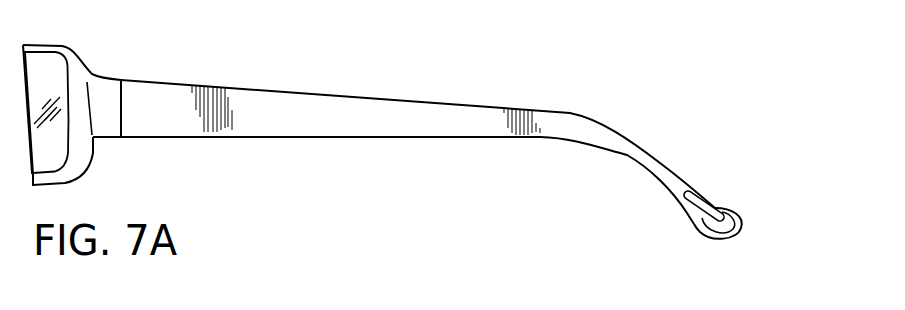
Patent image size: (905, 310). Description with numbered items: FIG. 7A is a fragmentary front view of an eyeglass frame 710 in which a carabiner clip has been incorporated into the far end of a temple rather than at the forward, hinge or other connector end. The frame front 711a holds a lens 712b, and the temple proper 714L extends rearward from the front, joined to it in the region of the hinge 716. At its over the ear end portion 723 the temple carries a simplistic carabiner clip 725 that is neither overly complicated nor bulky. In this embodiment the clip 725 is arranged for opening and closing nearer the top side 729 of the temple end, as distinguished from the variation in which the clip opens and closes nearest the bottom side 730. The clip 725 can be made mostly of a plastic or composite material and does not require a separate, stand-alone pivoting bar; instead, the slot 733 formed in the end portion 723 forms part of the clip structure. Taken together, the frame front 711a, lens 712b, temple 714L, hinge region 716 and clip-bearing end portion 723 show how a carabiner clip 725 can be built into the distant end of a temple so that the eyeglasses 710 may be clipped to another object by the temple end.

The eyeglasses 710 is at (407, 153).
The frame front 711a is at (33, 43).
The lens 712b is at (52, 135).
The left temple 714L is at (315, 102).
The hinge region 716 is at (119, 108).
The over the ear end portion 723 is at (689, 223).
The carabiner clip 725 is at (689, 193).
The top side 729 is at (761, 182).
The bottom side 730 is at (707, 235).
The slot 733 is at (687, 210).